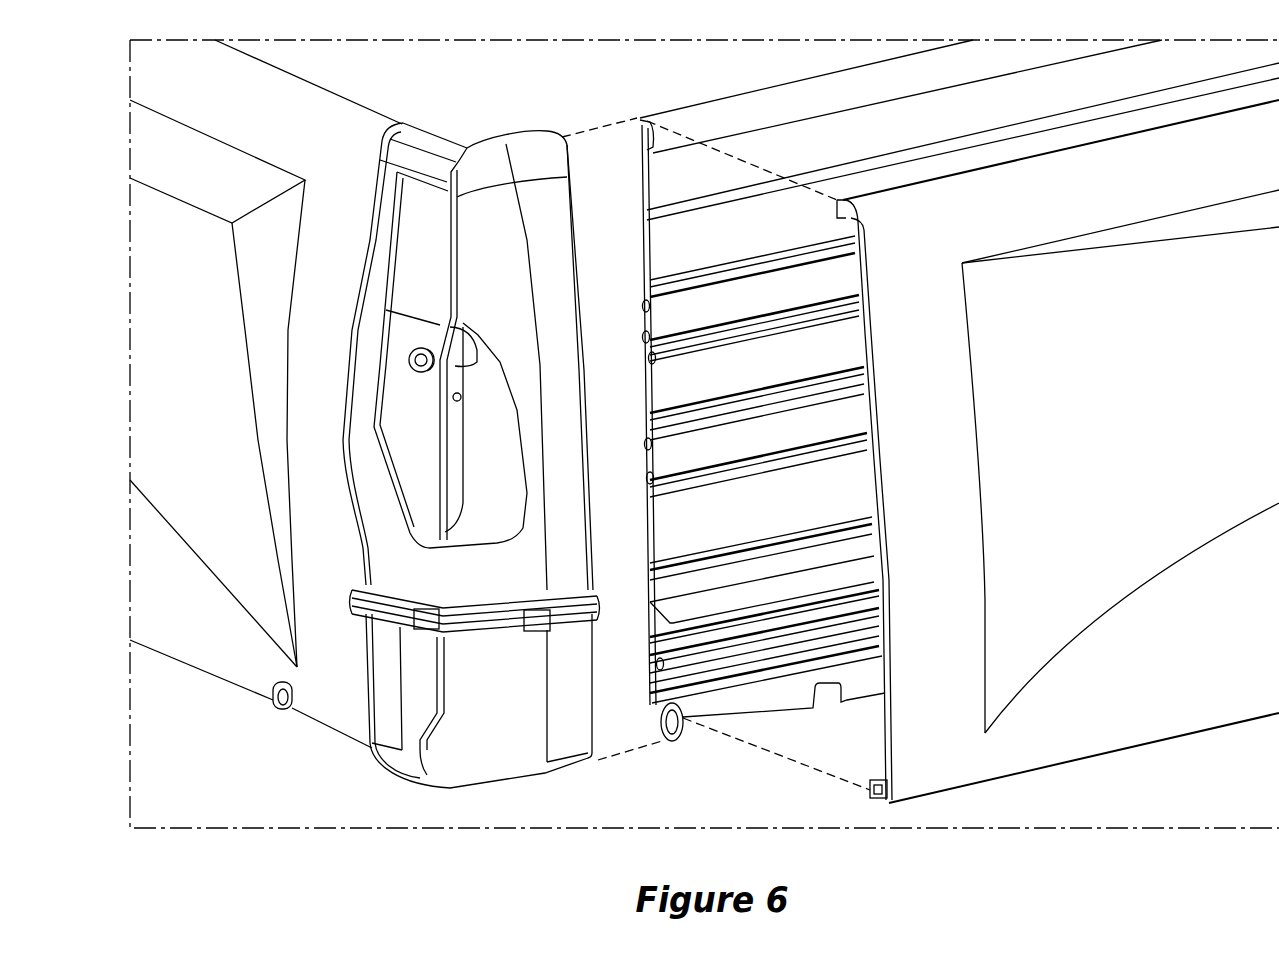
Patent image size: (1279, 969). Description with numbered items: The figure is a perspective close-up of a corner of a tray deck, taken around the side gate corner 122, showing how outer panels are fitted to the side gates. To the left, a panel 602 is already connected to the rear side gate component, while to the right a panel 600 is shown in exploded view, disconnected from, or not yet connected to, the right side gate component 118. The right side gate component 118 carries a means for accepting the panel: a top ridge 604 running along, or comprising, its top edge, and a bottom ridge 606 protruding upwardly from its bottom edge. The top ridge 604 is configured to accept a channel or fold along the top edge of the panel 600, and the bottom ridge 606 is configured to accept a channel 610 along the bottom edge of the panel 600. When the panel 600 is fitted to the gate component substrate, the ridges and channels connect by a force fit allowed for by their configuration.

The right side gate component 118 is at (670, 580).
The side gate corner 122 is at (478, 772).
The panel 600 is at (1058, 489).
The panel 602 is at (143, 353).
The top ridge 604 is at (637, 118).
The bottom ridge 606 is at (663, 693).
The channel 610 is at (870, 798).